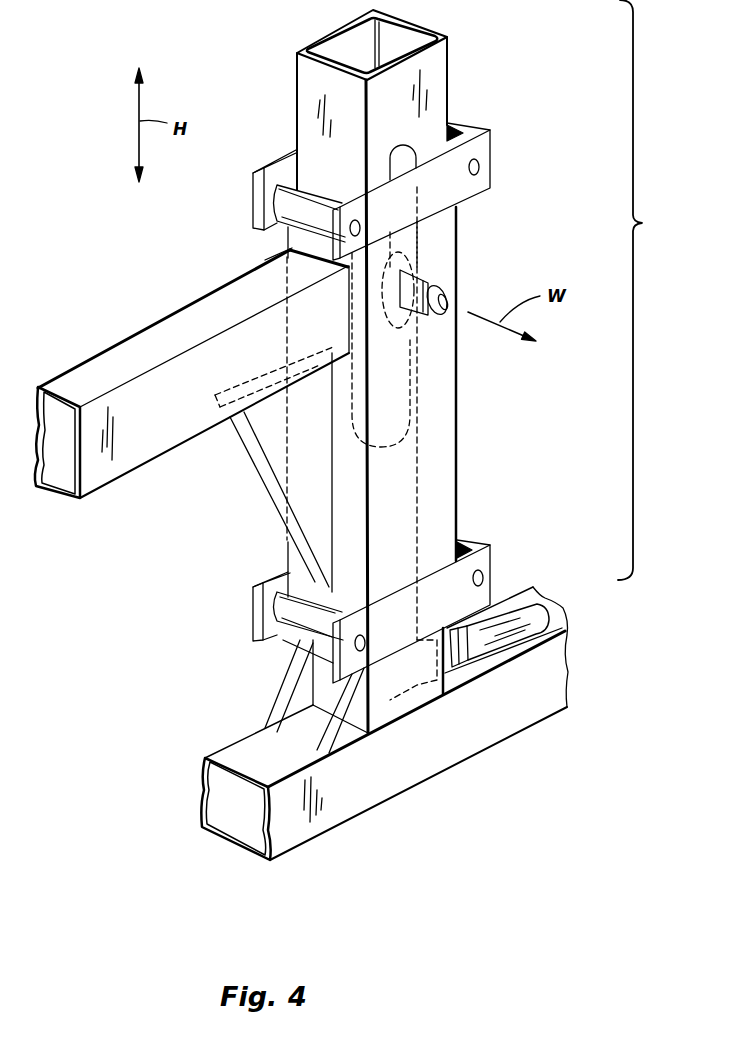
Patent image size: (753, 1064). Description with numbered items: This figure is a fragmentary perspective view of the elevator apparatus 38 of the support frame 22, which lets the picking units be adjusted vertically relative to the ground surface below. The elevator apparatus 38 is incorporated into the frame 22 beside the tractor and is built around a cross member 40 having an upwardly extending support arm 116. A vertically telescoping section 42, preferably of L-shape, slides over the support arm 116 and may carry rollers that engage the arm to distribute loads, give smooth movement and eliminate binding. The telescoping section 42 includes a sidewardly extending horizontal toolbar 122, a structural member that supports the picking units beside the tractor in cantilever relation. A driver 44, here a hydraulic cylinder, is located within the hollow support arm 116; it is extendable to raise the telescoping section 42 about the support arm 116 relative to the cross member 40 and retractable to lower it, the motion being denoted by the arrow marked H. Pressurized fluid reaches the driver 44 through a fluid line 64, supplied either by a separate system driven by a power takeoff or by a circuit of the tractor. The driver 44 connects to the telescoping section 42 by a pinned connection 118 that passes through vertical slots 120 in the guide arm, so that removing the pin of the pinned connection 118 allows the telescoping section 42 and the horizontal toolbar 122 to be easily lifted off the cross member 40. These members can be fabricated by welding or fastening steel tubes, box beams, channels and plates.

The frame 22 is at (158, 820).
The elevator apparatus 38 is at (650, 290).
The cross member 40 is at (384, 808).
The telescoping section 42 is at (455, 388).
The driver 44 is at (420, 481).
The fluid line 64 is at (508, 649).
The support arm 116 is at (453, 683).
The pinned connection 118 is at (430, 287).
The vertical slots 120 is at (412, 157).
The horizontal toolbar 122 is at (157, 458).